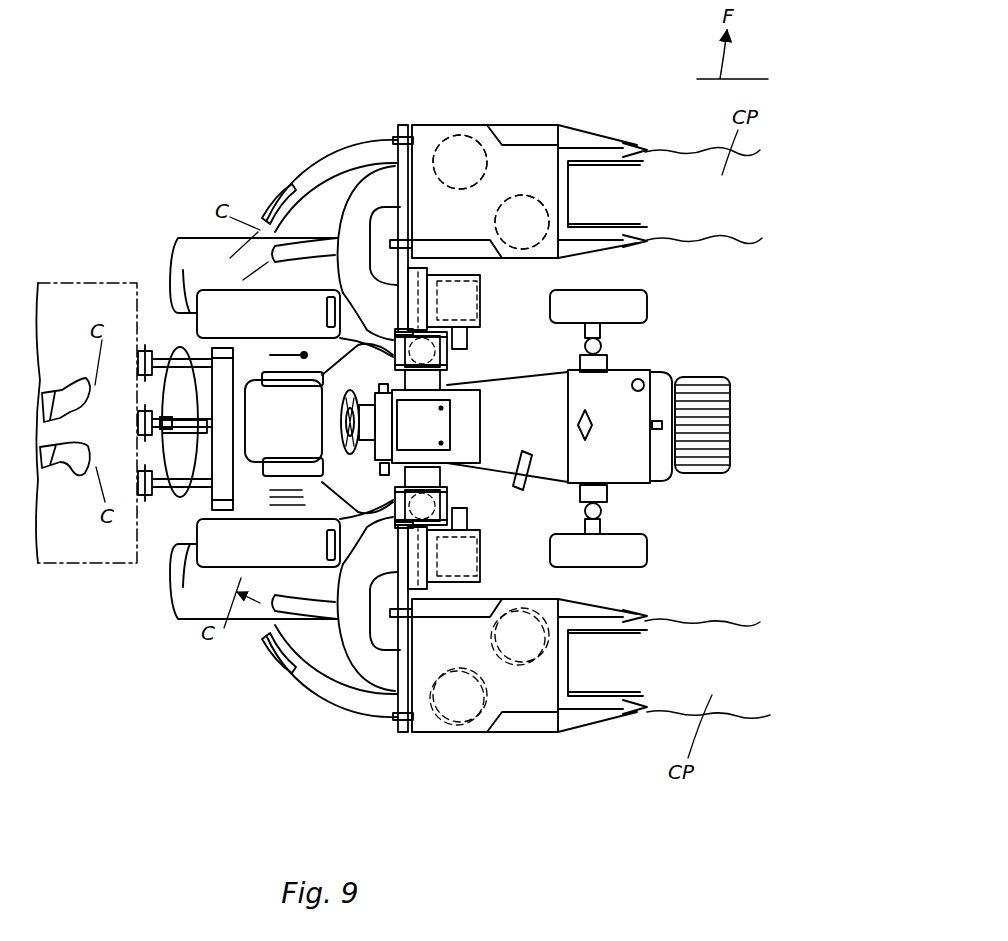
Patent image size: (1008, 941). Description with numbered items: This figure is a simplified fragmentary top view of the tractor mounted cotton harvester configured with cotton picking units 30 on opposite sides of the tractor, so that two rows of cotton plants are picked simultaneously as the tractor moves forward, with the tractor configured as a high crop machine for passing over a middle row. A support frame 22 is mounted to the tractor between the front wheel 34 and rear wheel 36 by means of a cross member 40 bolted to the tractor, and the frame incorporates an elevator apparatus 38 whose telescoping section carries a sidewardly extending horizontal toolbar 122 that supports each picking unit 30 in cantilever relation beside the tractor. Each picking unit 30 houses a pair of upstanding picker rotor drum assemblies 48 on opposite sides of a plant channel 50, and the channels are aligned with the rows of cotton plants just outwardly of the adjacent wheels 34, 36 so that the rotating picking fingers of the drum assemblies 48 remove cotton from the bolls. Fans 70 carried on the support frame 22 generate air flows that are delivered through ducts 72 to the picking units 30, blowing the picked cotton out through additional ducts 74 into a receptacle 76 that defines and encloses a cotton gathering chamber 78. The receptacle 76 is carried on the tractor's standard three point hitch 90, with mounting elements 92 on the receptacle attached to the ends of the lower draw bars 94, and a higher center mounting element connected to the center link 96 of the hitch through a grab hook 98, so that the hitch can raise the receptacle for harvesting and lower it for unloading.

The support frame 22 is at (660, 368).
The cotton picking unit 30 is at (499, 125).
The front wheel 34 is at (640, 292).
The rear wheel 36 is at (192, 237).
The elevator apparatus 38 is at (448, 358).
The cross member 40 is at (444, 463).
The picker rotor drum assembly 48 is at (460, 135).
The plant channel 50 is at (640, 172).
The fan 70 is at (481, 298).
The duct 72 is at (316, 157).
The additional duct 74 is at (68, 385).
The receptacle 76 is at (57, 563).
The cotton gathering chamber 78 is at (70, 316).
The three point hitch 90 is at (170, 353).
The mounting element 92 is at (150, 347).
The lower draw bar 94 is at (197, 352).
The center link 96 is at (232, 448).
The grab hook 98 is at (160, 438).
The horizontal toolbar 122 is at (395, 147).